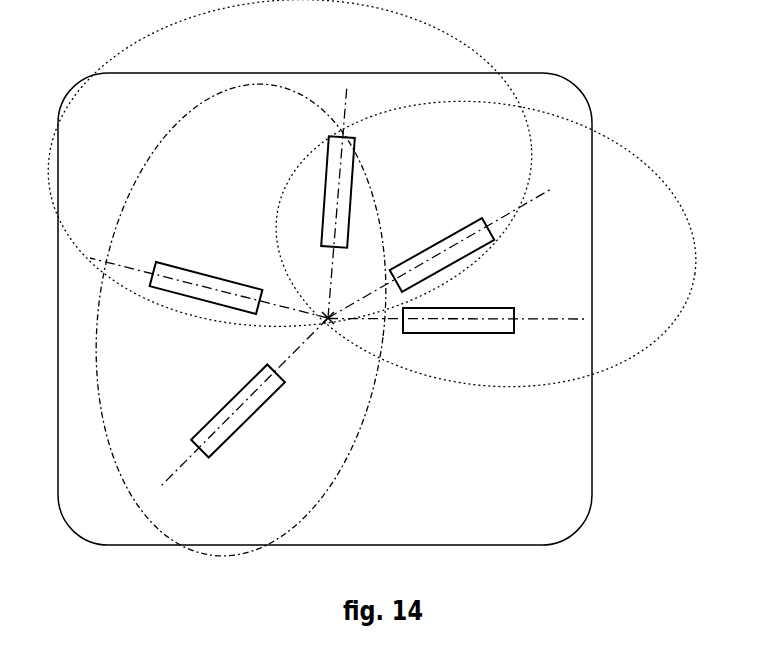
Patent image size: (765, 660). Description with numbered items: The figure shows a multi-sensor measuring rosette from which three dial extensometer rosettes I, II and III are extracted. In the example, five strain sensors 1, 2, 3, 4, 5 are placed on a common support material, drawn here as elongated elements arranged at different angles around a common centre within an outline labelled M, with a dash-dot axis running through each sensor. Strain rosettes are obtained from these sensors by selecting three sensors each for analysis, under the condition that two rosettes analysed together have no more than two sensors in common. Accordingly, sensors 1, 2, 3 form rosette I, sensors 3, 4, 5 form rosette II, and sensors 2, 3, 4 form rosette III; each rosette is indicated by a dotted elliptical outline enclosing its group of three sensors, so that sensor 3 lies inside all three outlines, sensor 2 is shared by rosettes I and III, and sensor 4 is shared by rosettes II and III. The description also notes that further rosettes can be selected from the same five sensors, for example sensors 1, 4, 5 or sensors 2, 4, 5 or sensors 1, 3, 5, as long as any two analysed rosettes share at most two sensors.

The strain sensor 1 is at (458, 307).
The strain sensor 2 is at (440, 253).
The strain sensor 3 is at (332, 201).
The strain sensor 4 is at (209, 280).
The strain sensor 5 is at (244, 402).
The dial extensometer rosette I is at (485, 244).
The dial extensometer rosette II is at (241, 319).
The dial extensometer rosette III is at (290, 170).
The housing / module M is at (325, 309).